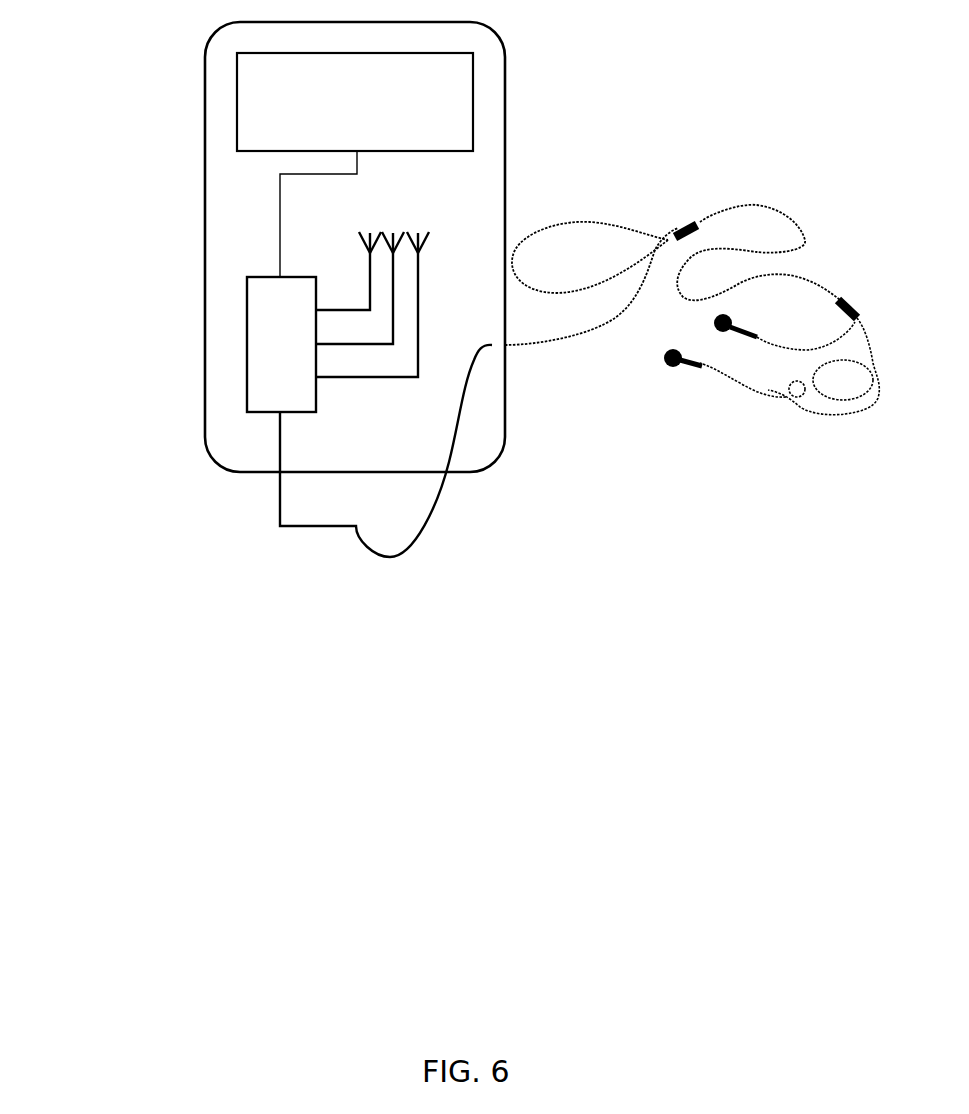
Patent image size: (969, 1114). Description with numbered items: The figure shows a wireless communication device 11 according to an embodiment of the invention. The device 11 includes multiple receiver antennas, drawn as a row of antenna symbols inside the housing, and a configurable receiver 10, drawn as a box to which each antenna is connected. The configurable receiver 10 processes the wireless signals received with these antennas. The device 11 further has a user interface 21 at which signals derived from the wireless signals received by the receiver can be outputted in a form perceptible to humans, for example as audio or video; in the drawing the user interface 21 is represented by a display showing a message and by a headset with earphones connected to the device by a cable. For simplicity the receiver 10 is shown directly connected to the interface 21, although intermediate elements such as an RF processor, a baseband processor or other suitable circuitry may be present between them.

The configurable receiver 10 is at (267, 360).
The wireless communication device 11 is at (172, 485).
The user interface 21 is at (608, 213).